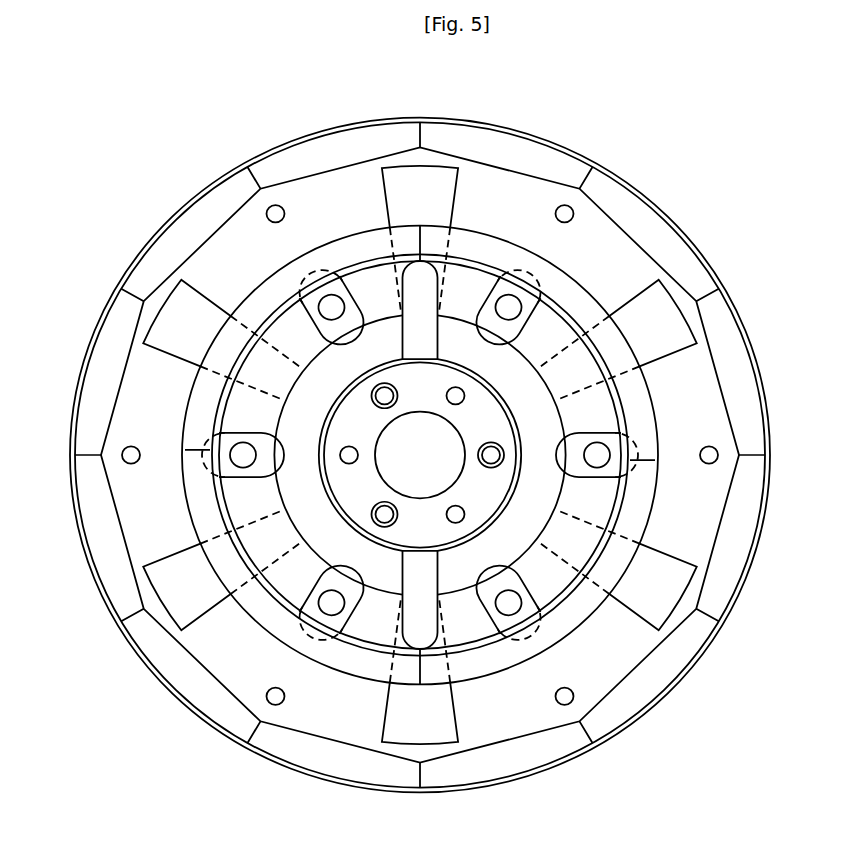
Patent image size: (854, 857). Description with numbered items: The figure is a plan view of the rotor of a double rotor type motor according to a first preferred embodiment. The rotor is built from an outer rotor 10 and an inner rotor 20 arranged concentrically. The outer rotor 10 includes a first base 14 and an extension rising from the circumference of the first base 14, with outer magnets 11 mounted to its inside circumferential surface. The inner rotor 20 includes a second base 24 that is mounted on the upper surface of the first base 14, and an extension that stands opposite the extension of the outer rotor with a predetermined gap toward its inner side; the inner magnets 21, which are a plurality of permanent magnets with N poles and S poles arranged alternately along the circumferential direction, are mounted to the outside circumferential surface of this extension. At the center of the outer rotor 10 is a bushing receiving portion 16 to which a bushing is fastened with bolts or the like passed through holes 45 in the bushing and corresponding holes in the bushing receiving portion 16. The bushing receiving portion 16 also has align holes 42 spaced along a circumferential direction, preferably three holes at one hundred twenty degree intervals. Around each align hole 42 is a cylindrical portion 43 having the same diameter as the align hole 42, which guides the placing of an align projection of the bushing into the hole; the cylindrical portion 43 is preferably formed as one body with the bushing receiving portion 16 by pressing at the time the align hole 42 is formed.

The outer rotor 10 is at (183, 193).
The outer magnets 11 is at (500, 760).
The first base 14 is at (600, 660).
The bushing receiving portion 16 is at (343, 436).
The inner rotor 20 is at (593, 282).
The inner magnets 21 is at (640, 402).
The second base 24 is at (372, 612).
The align hole 42 is at (380, 397).
The cylindrical portion 43 is at (382, 386).
The holes 45 is at (458, 385).